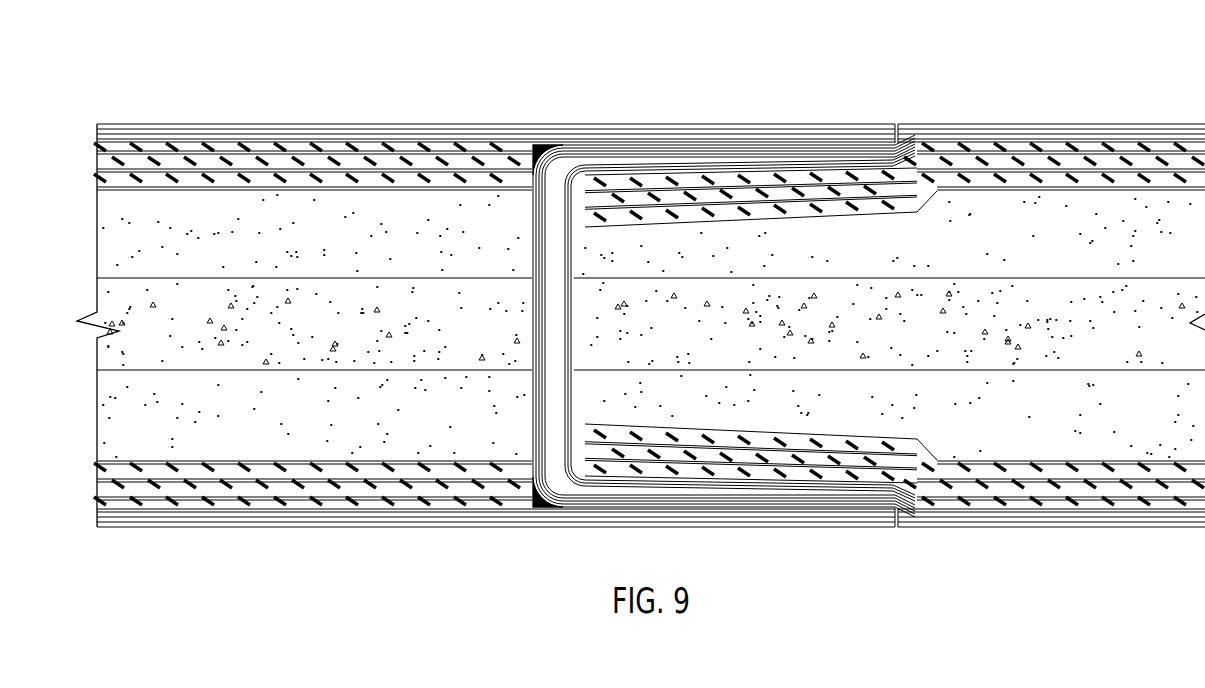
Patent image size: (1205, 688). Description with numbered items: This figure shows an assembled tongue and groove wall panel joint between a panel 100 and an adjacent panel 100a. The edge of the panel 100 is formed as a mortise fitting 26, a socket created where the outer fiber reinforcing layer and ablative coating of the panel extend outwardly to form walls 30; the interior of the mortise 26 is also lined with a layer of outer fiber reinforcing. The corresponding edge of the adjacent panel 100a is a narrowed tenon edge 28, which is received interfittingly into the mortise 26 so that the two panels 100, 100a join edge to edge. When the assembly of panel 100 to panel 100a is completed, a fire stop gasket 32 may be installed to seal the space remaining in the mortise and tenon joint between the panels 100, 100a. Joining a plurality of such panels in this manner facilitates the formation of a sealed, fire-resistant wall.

The panel 100 is at (302, 63).
The adjacent panel 100a is at (1080, 63).
The mortise fitting 26 is at (553, 217).
The tenon edge 28 is at (898, 183).
The walls 30 is at (755, 128).
The fire stop gasket 32 is at (590, 163).